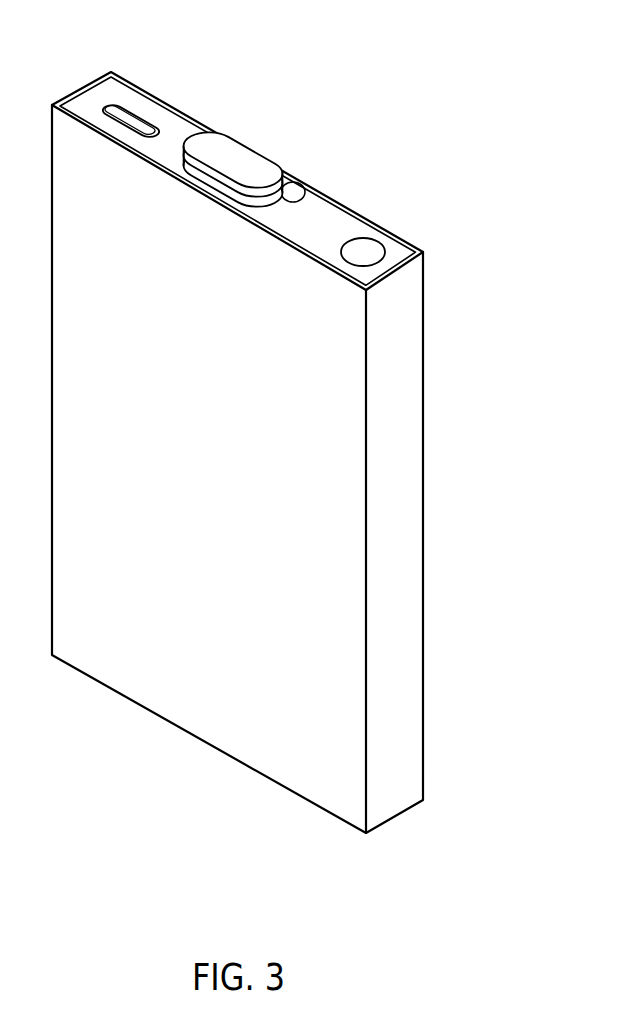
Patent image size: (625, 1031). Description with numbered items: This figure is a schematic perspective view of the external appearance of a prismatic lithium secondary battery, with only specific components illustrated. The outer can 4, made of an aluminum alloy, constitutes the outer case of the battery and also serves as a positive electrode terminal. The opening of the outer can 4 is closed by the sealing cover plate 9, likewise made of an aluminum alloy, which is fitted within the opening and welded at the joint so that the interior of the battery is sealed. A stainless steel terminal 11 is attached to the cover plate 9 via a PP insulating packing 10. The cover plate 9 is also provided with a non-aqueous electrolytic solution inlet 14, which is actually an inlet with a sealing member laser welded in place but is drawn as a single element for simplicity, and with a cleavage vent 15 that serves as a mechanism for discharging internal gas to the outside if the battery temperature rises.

The outer can 4 is at (412, 485).
The sealing cover plate 9 is at (177, 133).
The insulating packing 10 is at (288, 198).
The terminal 11 is at (242, 158).
The non-aqueous electrolytic solution inlet 14 is at (363, 252).
The cleavage vent 15 is at (131, 121).